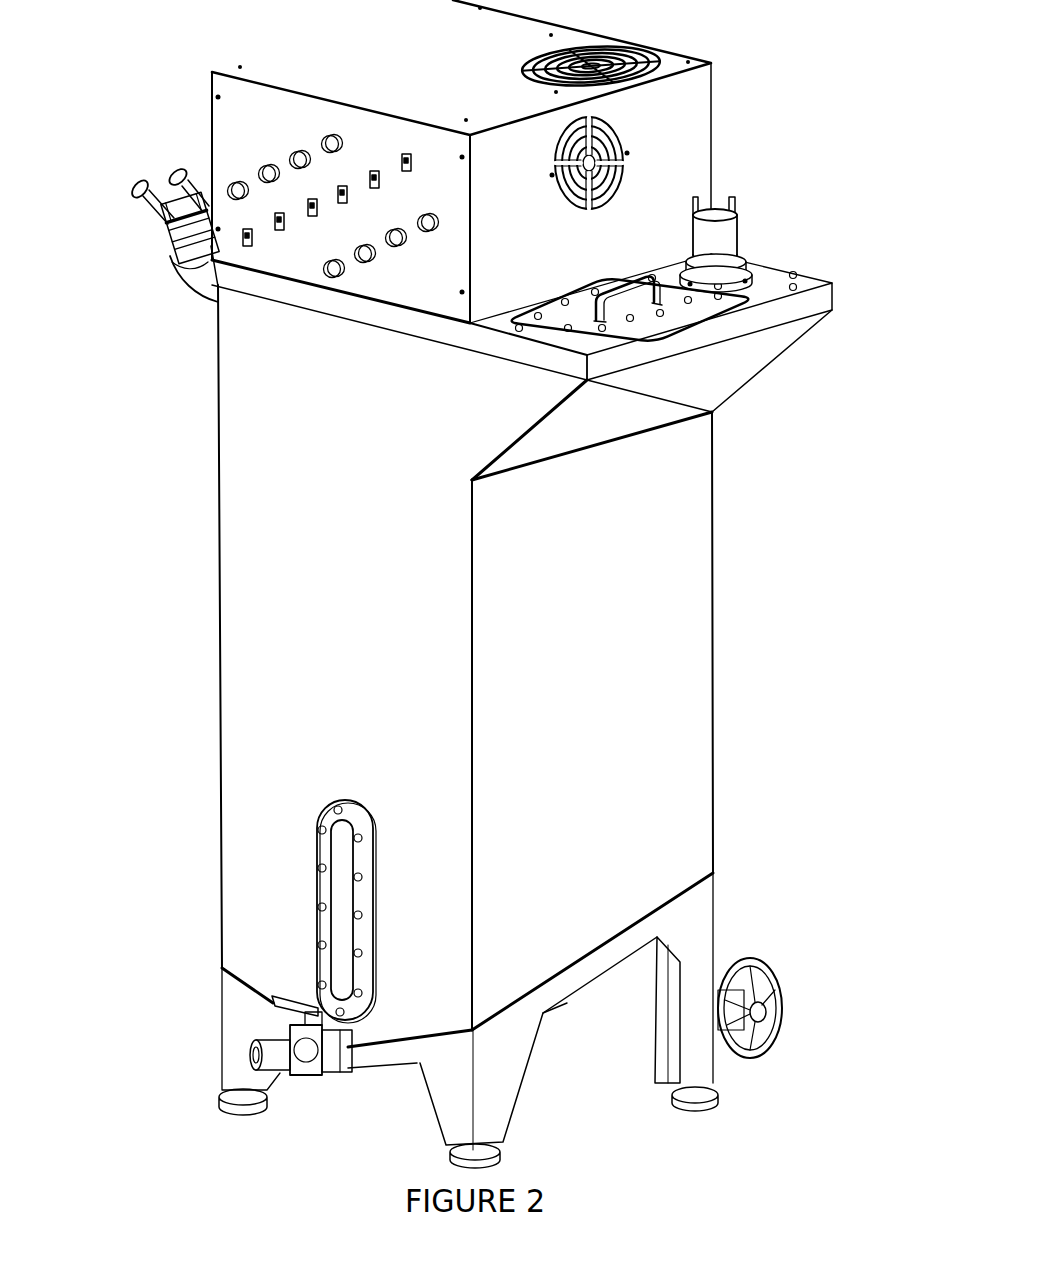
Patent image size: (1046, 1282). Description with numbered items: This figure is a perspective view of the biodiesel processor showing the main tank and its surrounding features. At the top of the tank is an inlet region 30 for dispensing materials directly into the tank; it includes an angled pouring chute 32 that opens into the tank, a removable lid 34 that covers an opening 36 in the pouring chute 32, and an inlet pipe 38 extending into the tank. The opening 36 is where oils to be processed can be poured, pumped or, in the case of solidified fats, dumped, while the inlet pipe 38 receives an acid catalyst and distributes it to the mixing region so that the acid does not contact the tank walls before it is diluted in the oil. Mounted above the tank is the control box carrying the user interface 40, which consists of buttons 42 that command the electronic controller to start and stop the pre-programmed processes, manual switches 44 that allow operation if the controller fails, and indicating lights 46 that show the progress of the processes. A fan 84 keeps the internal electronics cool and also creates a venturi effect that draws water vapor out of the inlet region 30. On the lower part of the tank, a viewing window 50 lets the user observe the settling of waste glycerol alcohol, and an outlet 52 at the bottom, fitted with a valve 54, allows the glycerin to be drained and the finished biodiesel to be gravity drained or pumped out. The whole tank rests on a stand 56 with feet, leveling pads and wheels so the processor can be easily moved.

The inlet region 30 is at (753, 285).
The angled pouring chute 32 is at (537, 428).
The removable lid 34 is at (585, 318).
The opening 36 is at (753, 300).
The inlet pipe 38 is at (724, 236).
The user interface 40 is at (247, 147).
The buttons 42 is at (232, 196).
The manual switches 44 is at (222, 295).
The indicating lights 46 is at (335, 282).
The viewing window 50 is at (340, 933).
The outlet 52 is at (250, 1110).
The valve 54 is at (348, 1075).
The stand 56 is at (525, 1088).
The fan 84 is at (623, 173).